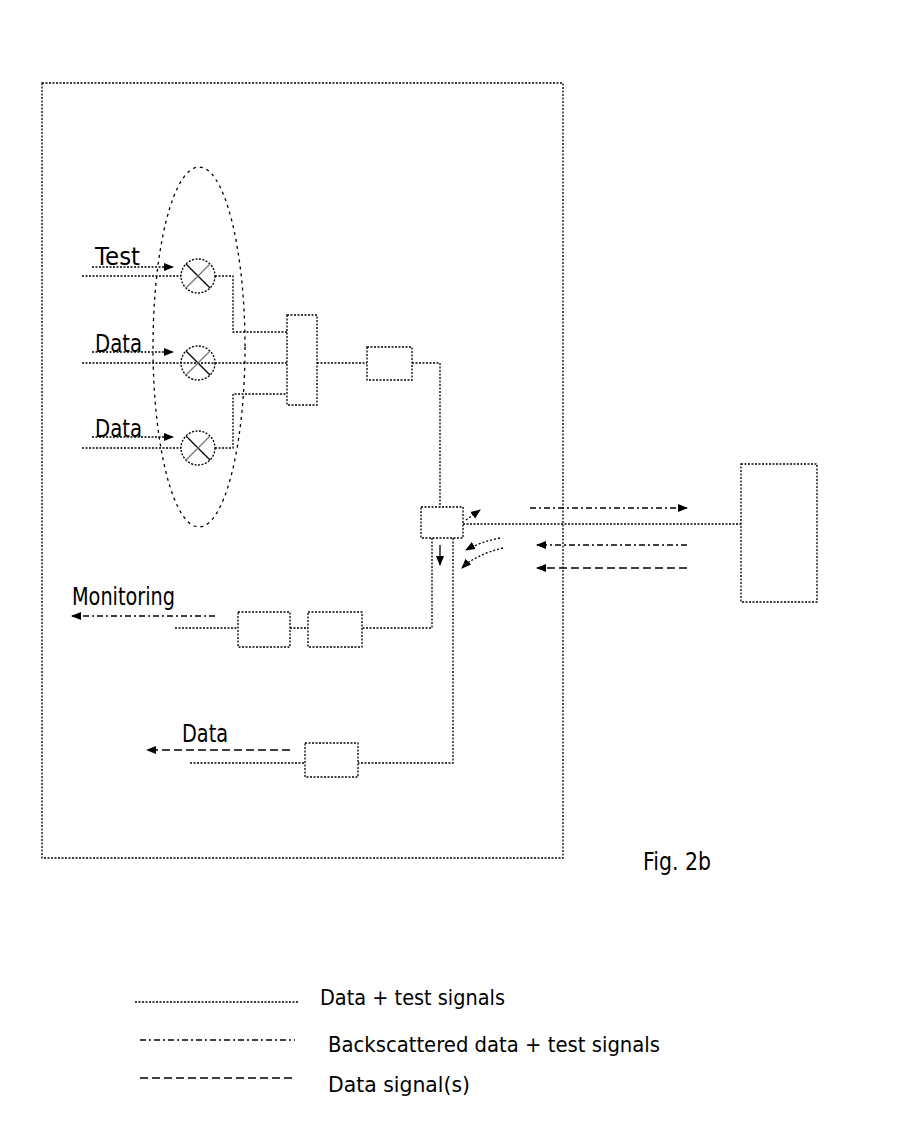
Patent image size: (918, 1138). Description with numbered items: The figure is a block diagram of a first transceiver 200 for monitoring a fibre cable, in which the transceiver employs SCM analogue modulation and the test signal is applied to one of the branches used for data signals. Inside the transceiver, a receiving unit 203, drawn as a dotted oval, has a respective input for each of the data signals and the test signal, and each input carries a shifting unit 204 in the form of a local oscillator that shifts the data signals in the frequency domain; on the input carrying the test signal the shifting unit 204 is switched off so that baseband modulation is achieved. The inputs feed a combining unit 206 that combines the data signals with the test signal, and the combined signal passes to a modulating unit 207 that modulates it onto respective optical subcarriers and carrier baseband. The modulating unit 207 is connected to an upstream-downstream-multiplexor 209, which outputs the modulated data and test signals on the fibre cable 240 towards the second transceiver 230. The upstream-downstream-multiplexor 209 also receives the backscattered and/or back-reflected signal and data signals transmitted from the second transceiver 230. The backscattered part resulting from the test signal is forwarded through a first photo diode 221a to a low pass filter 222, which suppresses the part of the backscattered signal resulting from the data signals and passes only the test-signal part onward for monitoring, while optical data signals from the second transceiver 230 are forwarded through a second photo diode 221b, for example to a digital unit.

The first transceiver 200 is at (93, 121).
The receiving unit 203 is at (230, 195).
The shifting unit 204 is at (214, 437).
The combining unit 206 is at (317, 315).
The modulating unit 207 is at (388, 347).
The upstream-downstream-multiplexor 209 is at (462, 508).
The photo diode 221a is at (315, 612).
The photo diode 221b is at (311, 743).
The low pass filter 222 is at (243, 612).
The second transceiver 230 is at (770, 465).
The fibre cable 240 is at (620, 513).